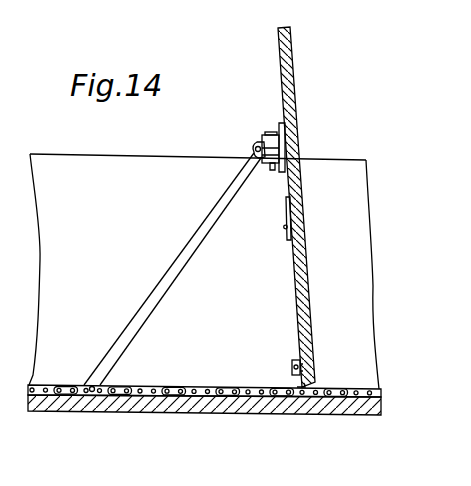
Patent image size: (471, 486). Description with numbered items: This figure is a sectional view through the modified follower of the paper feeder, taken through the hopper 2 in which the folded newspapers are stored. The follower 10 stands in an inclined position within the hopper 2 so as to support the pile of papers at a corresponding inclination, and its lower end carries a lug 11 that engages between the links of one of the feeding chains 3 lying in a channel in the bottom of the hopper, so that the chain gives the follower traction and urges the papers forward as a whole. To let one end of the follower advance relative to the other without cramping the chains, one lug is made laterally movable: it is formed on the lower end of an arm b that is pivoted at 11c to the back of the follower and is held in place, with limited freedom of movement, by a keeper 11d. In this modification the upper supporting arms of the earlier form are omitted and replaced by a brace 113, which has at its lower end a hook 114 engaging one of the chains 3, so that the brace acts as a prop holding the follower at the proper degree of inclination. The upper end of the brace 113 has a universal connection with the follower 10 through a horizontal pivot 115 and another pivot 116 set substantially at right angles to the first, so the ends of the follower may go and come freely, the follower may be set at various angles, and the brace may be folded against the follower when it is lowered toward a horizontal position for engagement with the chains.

The hopper 2 is at (194, 160).
The feeding chain 3 is at (177, 388).
The follower 10 is at (295, 106).
The lug 11 is at (292, 287).
The pivot 11c is at (250, 234).
The arm b is at (261, 259).
The keeper 11d is at (265, 358).
The brace 113 is at (189, 238).
The hook 114 is at (90, 393).
The horizontal pivot 115 is at (256, 145).
The pivot 116 is at (272, 132).